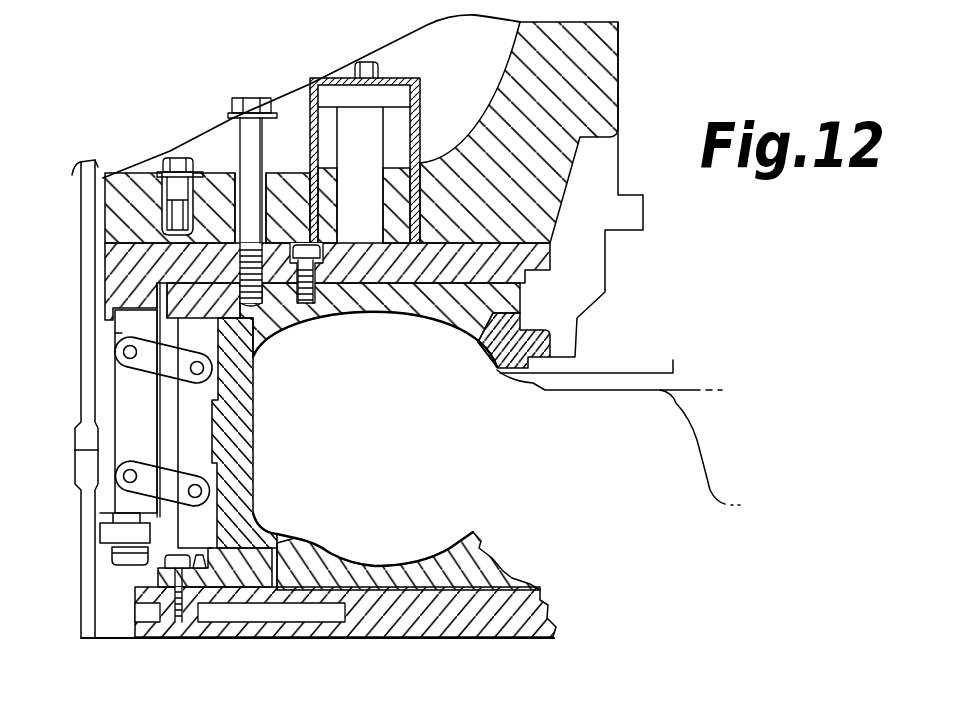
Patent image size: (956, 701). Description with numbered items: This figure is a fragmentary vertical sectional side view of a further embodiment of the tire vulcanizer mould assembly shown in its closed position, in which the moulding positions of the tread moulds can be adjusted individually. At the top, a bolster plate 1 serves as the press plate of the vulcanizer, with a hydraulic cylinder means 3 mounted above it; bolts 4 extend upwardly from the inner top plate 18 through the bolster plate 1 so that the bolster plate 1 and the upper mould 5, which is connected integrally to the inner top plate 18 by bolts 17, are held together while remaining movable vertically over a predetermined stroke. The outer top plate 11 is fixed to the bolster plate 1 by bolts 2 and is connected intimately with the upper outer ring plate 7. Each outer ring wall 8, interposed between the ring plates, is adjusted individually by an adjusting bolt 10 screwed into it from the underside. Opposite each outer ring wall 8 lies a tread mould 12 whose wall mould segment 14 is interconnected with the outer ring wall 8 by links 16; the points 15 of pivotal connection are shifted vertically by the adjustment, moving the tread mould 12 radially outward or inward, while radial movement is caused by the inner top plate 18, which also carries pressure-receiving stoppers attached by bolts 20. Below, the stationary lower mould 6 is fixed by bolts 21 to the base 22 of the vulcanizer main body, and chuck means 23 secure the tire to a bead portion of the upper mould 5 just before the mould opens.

The bolster plate 1 is at (94, 198).
The bolts 2 is at (183, 158).
The hydraulic cylinder means 3 is at (356, 64).
The bolts 4 is at (248, 98).
The upper mould 5 is at (381, 310).
The stationary lower mould 6 is at (324, 554).
The upper outer ring plate 7 is at (100, 537).
The outer ring wall 8 is at (110, 502).
The adjusting bolt 10 is at (113, 560).
The outer top plate 11 is at (103, 268).
The tread mould 12 is at (232, 390).
The segment of wall mould 14 is at (193, 413).
The points of pivotal connection 15 is at (120, 355).
The links 16 is at (110, 333).
The bolts 17 is at (304, 328).
The inner top plate 18 is at (445, 158).
The bolts 20 is at (270, 528).
The bolts 21 is at (195, 548).
The base 22 is at (374, 565).
The chuck means 23 is at (505, 377).